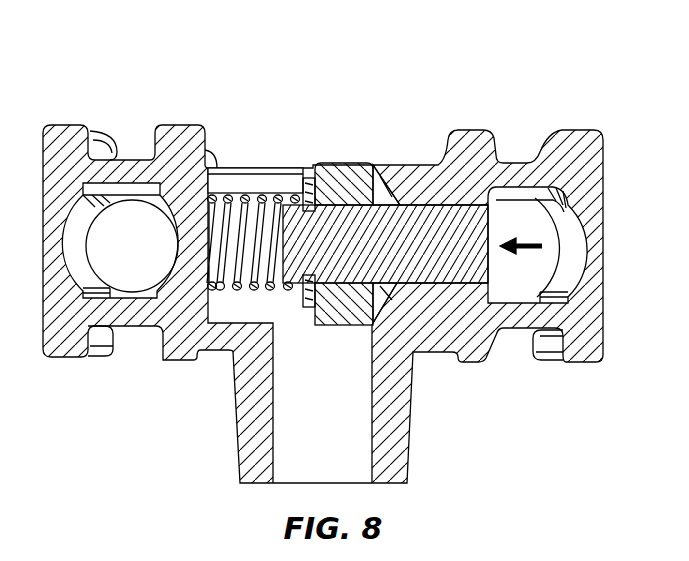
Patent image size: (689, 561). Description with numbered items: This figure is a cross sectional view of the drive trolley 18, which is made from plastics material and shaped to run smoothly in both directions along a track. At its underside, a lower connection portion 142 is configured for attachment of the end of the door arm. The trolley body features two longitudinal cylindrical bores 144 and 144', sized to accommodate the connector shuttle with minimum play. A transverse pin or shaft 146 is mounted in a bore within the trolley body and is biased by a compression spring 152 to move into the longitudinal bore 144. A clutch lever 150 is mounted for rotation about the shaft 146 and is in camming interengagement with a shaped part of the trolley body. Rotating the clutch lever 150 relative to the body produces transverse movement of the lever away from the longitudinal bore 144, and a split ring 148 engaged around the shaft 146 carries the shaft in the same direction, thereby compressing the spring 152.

The drive trolley 18 is at (552, 110).
The lower connection portion 142 is at (395, 417).
The longitudinal cylindrical bore 144 is at (543, 306).
The longitudinal cylindrical bore 144' is at (130, 246).
The transverse pin or shaft 146 is at (420, 217).
The split ring 148 is at (308, 307).
The clutch lever 150 is at (348, 183).
The compression spring 152 is at (257, 170).